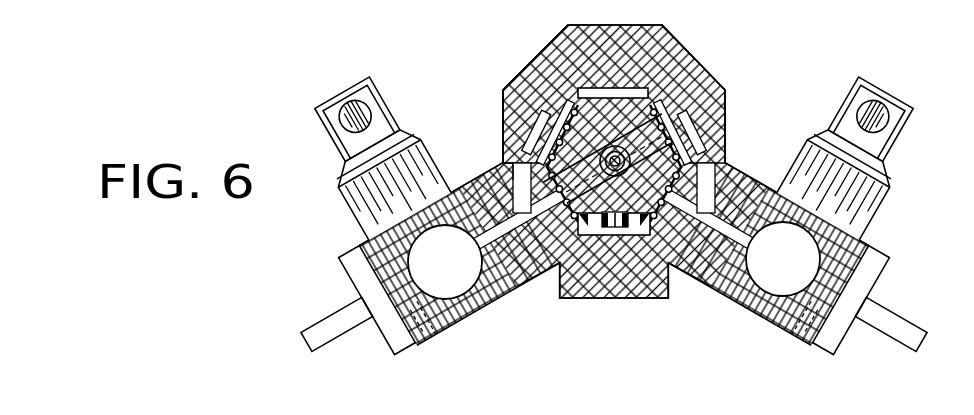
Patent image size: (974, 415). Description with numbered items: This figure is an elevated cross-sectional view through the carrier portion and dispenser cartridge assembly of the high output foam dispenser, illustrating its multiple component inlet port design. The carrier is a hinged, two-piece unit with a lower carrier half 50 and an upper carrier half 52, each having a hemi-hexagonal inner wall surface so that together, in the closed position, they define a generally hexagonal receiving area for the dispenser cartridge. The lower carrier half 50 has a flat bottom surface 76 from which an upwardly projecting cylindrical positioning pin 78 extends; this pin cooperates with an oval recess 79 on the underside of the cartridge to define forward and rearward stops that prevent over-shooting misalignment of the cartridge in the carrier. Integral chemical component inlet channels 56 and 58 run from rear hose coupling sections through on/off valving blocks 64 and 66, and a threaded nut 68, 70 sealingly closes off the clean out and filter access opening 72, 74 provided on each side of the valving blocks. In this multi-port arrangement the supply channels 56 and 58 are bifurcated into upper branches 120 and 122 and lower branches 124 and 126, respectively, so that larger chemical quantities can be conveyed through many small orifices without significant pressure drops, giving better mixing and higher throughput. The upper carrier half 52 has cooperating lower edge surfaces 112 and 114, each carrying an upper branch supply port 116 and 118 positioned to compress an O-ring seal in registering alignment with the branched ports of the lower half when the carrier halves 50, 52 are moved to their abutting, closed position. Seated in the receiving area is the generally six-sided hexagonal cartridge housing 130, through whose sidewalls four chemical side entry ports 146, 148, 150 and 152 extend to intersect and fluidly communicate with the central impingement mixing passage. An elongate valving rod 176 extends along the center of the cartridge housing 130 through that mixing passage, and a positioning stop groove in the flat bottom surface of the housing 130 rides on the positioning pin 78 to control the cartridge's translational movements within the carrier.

The lower carrier half 50 is at (573, 257).
The upper carrier half 52 is at (701, 93).
The chemical component inlet channel 56 is at (428, 240).
The chemical component inlet channel 58 is at (790, 265).
The on/off valving block 64 is at (316, 109).
The on/off valving block 66 is at (906, 104).
The threaded nut 68 is at (316, 333).
The threaded nut 70 is at (894, 318).
The clean out and filter access opening 72 is at (427, 340).
The right seal 74 is at (793, 335).
The flat bottom surface 76 is at (660, 300).
The cylindrical positioning pin 78 is at (623, 224).
The oval recess 79 is at (604, 229).
The lower edge surface 112 is at (502, 158).
The lower edge surface 114 is at (726, 156).
The upper branch supply port 116 is at (509, 123).
The upper branch supply port 118 is at (720, 143).
The upper branch 120 is at (531, 112).
The upper branch 122 is at (725, 100).
The lower branch 124 is at (506, 227).
The lower branch 126 is at (727, 228).
The hexagonal cartridge housing 130 is at (652, 87).
The chemical side entry port 146 is at (558, 212).
The chemical side entry port 148 is at (664, 220).
The chemical side entry port 150 is at (571, 112).
The chemical side entry port 152 is at (649, 89).
The valving rod 176 is at (511, 180).